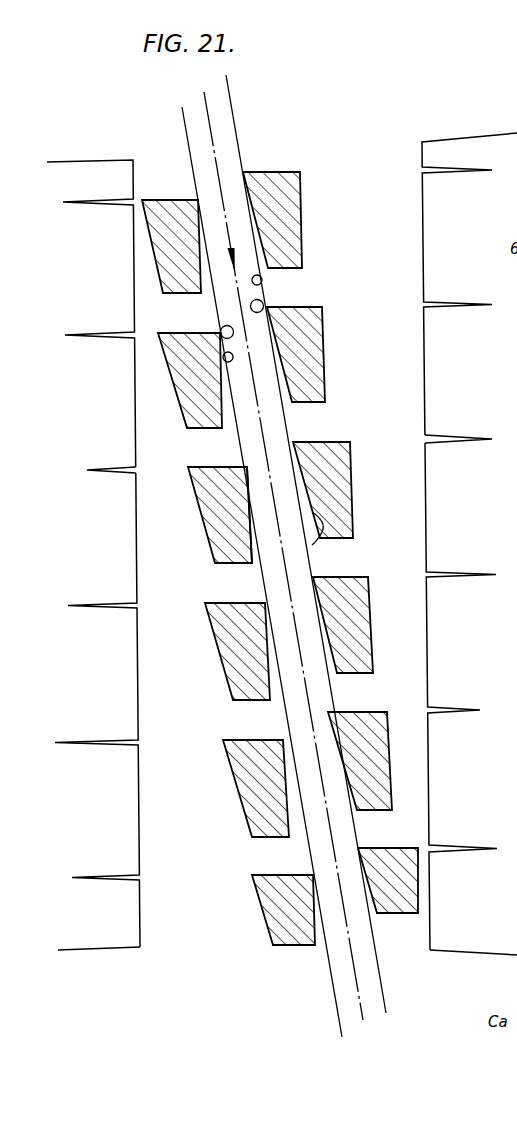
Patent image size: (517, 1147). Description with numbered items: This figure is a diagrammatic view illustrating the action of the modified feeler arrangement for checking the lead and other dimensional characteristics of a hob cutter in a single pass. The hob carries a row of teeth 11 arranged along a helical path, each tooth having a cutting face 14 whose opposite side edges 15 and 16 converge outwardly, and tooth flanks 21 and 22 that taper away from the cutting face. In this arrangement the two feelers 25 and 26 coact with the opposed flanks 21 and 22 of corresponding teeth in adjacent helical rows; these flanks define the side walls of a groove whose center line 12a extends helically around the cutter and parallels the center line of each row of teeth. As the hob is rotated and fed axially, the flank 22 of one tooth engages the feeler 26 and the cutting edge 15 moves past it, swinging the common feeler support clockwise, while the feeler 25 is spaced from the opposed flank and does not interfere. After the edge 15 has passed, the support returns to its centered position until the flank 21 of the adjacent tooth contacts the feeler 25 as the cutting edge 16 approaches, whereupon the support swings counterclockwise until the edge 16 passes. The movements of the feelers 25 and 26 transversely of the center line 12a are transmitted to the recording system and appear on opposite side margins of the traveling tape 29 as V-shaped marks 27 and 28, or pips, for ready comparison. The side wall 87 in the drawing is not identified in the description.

The teeth 11 is at (160, 244).
The center line of groove 12a is at (307, 693).
The cutting face 14 is at (330, 448).
The side edge 15 is at (293, 442).
The side edge 16 is at (243, 468).
The tooth flank 21 is at (255, 537).
The tooth flank 22 is at (323, 538).
The feeler 25 is at (223, 354).
The feeler 26 is at (263, 282).
The mark 27 is at (90, 468).
The mark 28 is at (497, 435).
The traveling tape 29 is at (115, 933).
The side wall 87 is at (142, 929).